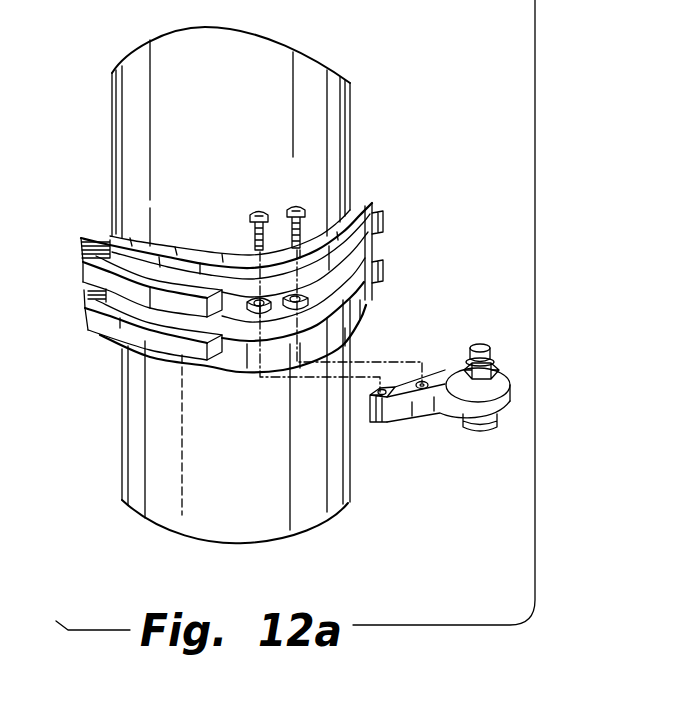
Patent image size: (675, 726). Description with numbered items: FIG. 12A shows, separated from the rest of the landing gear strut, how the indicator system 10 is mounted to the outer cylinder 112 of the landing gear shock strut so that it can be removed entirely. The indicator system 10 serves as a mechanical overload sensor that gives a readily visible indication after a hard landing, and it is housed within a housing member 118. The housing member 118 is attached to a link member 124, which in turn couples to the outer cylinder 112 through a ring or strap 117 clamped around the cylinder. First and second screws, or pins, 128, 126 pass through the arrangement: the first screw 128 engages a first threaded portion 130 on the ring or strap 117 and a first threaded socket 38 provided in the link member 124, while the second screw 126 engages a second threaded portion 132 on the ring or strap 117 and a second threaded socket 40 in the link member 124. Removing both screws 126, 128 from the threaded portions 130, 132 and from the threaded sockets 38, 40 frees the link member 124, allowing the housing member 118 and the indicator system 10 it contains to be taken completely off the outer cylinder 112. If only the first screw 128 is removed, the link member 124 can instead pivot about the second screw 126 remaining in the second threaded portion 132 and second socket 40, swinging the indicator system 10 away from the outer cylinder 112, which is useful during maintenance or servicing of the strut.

The outer cylinder 112 is at (347, 97).
The ring or strap 117 is at (135, 304).
The second screw 126 is at (248, 212).
The first screw 128 is at (288, 206).
The second threaded portion 132 is at (247, 300).
The first threaded portion 130 is at (300, 296).
The link member 124 is at (441, 379).
The second threaded socket 40 is at (380, 423).
The first threaded socket 38 is at (427, 389).
The housing member 118 is at (510, 396).
The indicator system 10 is at (497, 343).